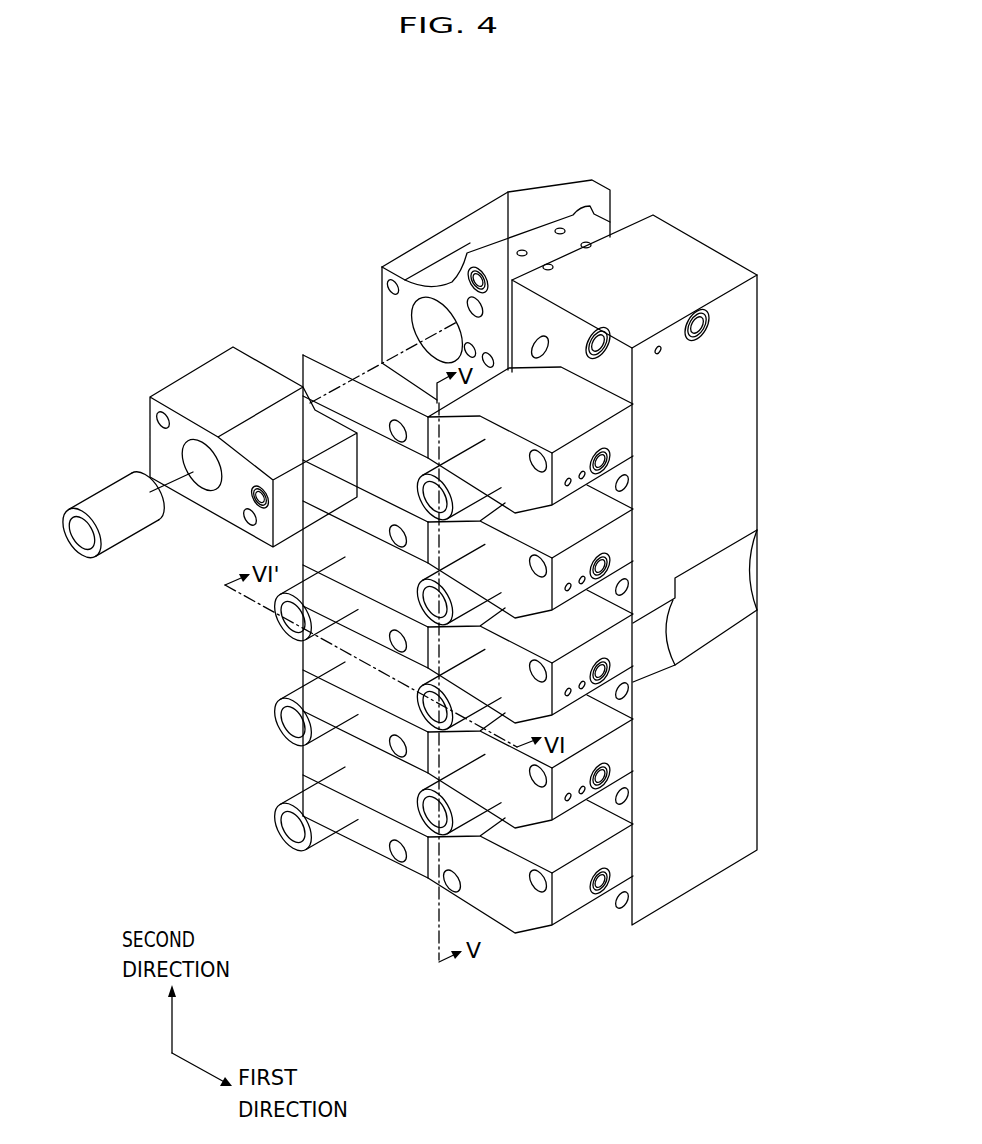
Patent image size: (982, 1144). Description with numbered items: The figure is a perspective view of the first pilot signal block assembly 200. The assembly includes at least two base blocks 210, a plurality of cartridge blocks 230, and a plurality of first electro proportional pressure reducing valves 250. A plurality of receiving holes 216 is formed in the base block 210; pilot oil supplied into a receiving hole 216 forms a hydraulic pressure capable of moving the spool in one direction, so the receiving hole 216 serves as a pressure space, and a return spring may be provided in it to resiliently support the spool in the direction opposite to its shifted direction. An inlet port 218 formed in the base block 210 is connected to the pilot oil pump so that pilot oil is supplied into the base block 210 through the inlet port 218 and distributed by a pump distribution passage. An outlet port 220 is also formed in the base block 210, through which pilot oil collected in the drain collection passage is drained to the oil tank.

The first pilot signal block assembly 200 is at (496, 113).
The base block 210 is at (732, 782).
The receiving hole 216 is at (432, 313).
The inlet port 218 is at (548, 263).
The outlet port 220 is at (590, 242).
The cartridge block 230 is at (577, 900).
The first electro proportional pressure reducing valve 250 is at (287, 835).